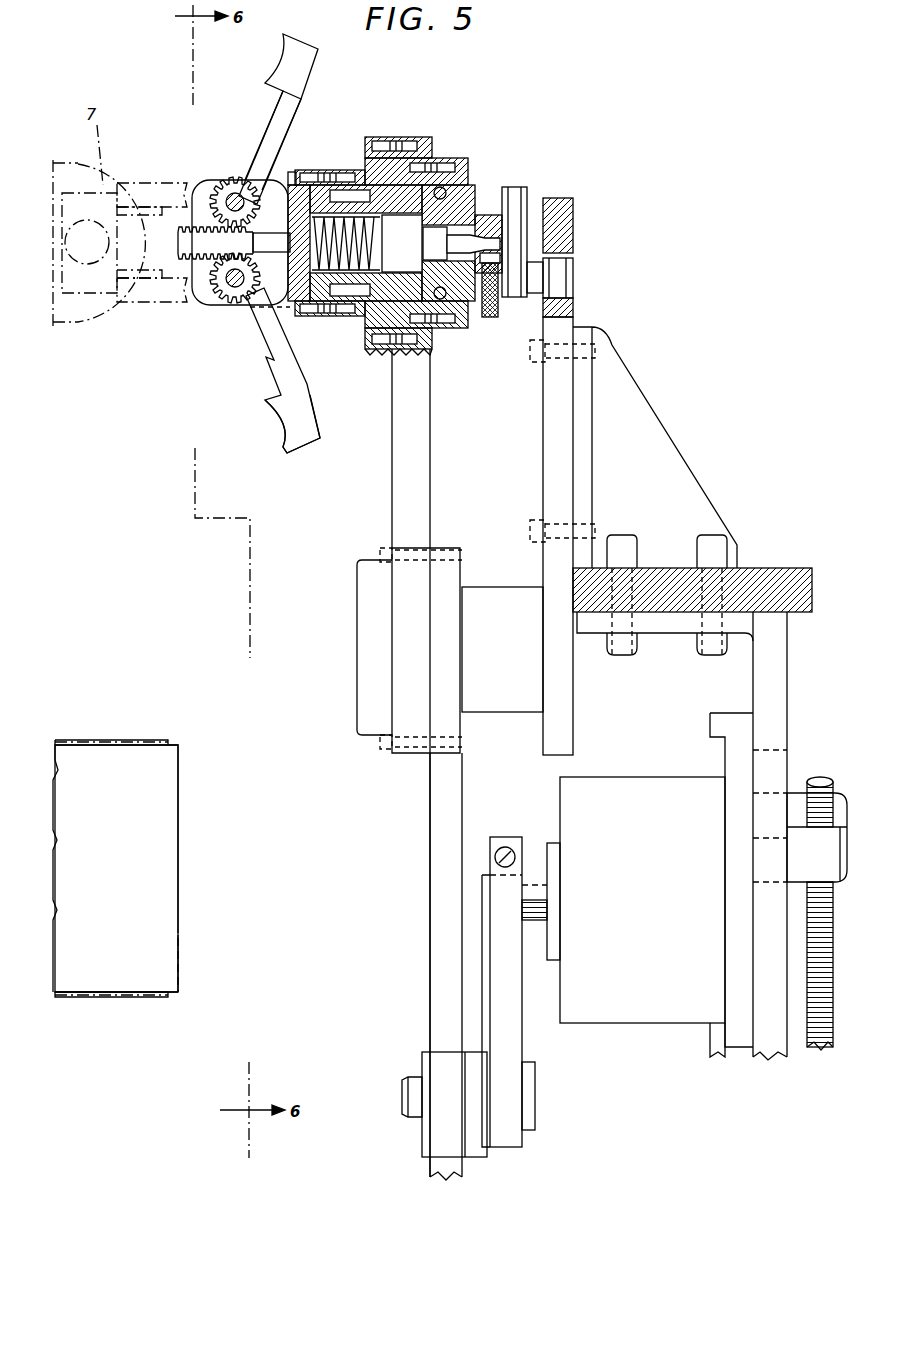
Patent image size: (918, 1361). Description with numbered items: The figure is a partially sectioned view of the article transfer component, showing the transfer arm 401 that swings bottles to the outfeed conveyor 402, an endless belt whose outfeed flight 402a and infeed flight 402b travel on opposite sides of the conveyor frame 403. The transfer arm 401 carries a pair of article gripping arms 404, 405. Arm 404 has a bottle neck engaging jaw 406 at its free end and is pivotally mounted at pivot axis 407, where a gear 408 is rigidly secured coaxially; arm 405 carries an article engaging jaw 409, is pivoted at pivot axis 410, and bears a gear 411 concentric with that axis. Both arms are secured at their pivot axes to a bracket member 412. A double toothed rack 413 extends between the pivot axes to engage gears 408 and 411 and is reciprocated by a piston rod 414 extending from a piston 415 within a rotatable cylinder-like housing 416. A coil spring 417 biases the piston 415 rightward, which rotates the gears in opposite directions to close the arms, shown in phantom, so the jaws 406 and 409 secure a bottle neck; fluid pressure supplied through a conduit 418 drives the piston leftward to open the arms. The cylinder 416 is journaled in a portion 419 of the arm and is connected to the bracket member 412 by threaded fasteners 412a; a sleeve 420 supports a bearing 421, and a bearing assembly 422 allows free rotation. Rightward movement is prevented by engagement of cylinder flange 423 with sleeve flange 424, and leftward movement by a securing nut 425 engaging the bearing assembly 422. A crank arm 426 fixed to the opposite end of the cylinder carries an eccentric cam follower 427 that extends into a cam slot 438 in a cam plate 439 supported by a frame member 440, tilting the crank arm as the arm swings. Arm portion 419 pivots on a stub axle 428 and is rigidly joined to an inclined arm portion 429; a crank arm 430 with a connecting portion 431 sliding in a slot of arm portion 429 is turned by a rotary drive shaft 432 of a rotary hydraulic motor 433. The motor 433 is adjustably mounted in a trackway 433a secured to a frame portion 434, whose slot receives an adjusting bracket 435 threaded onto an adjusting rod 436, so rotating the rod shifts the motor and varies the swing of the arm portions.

The transfer arm 401 is at (262, 105).
The outfeed conveyor 402 is at (168, 738).
The outfeed flight 402a is at (118, 742).
The infeed flight 402b is at (117, 997).
The conveyor frame 403 is at (147, 846).
The article gripping arm 404 is at (305, 110).
The article gripping arm 405 is at (262, 332).
The bottle neck engaging jaw 406 is at (300, 60).
The pivot axis 407 is at (228, 193).
The gear 408 is at (240, 192).
The article engaging jaw 409 is at (275, 424).
The pivot axis 410 is at (213, 300).
The gear 411 is at (235, 290).
The bracket member 412 is at (300, 166).
The threaded fasteners 412a is at (300, 176).
The double toothed rack 413 is at (195, 243).
The piston rod 414 is at (265, 238).
The piston 415 is at (444, 245).
The cylinder-like housing 416 is at (378, 276).
The coil spring 417 is at (375, 246).
The conduit 418 is at (492, 318).
The arm portion 419 is at (432, 424).
The sleeve 420 is at (388, 352).
The bearing 421 is at (345, 302).
The bearing assembly 422 is at (442, 187).
The cylinder flange 423 is at (345, 182).
The sleeve flange 424 is at (392, 140).
The securing nut 425 is at (475, 192).
The crank arm 426 is at (518, 190).
The cam follower 427 is at (560, 275).
The stub axle 428 is at (360, 637).
The inclined arm portion 429 is at (430, 817).
The crank arm 430 is at (515, 1050).
The connecting portion 431 is at (422, 1058).
The rotary drive shaft 432 is at (530, 880).
The rotary hydraulic motor 433 is at (640, 896).
The trackway 433a is at (712, 758).
The frame portion 434 is at (788, 662).
The adjusting bracket 435 is at (817, 837).
The adjusting rod 436 is at (818, 1050).
The cam slot 438 is at (575, 265).
The cam plate 439 is at (565, 205).
The frame member 440 is at (660, 420).